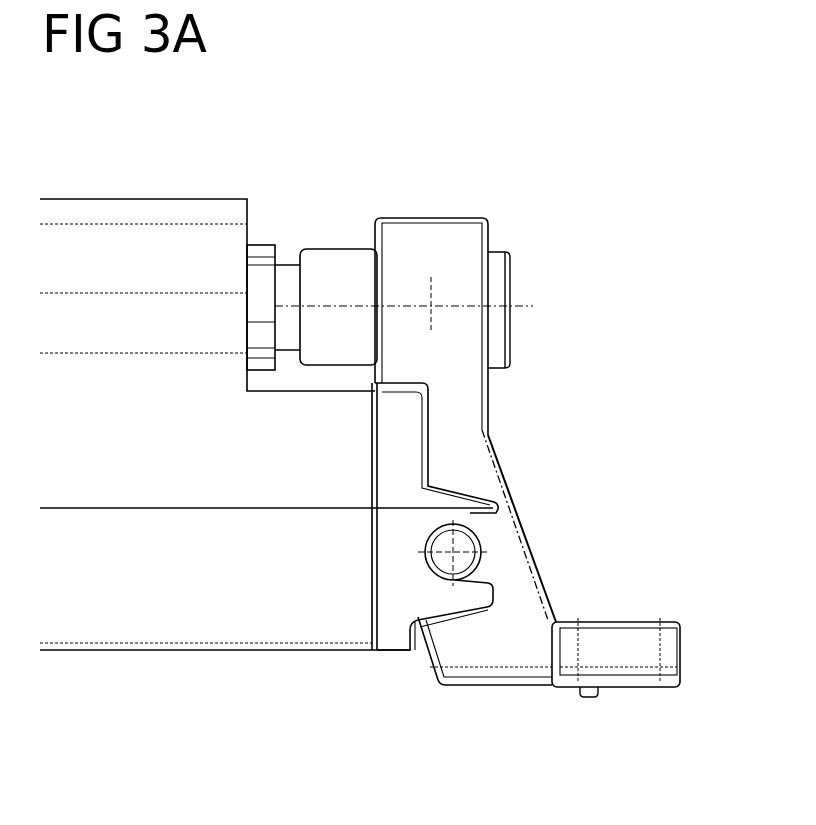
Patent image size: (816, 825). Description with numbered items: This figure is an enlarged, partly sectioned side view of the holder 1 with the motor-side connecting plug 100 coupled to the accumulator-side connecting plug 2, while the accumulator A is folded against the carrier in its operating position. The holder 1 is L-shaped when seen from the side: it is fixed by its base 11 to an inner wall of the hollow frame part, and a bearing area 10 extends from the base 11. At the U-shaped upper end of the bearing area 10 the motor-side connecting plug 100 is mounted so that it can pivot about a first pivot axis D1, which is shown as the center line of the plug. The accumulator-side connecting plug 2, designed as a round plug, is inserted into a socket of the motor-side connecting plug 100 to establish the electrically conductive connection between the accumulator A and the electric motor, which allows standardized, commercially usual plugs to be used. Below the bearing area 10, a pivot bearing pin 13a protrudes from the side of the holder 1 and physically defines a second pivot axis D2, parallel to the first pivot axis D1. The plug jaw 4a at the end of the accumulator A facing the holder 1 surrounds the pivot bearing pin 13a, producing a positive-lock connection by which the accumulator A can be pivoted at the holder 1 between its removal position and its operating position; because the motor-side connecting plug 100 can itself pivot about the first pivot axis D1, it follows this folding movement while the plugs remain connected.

The holder 1 is at (517, 488).
The accumulator-side connecting plug 2 is at (283, 275).
The plug jaw 4a is at (478, 585).
The bearing area 10 is at (468, 220).
The base 11 is at (628, 683).
The pivot bearing pin 13a is at (467, 548).
The motor-side connecting plug 100 is at (322, 265).
The accumulator A is at (278, 623).
The first pivot axis D1 is at (431, 306).
The second pivot axis D2 is at (455, 555).